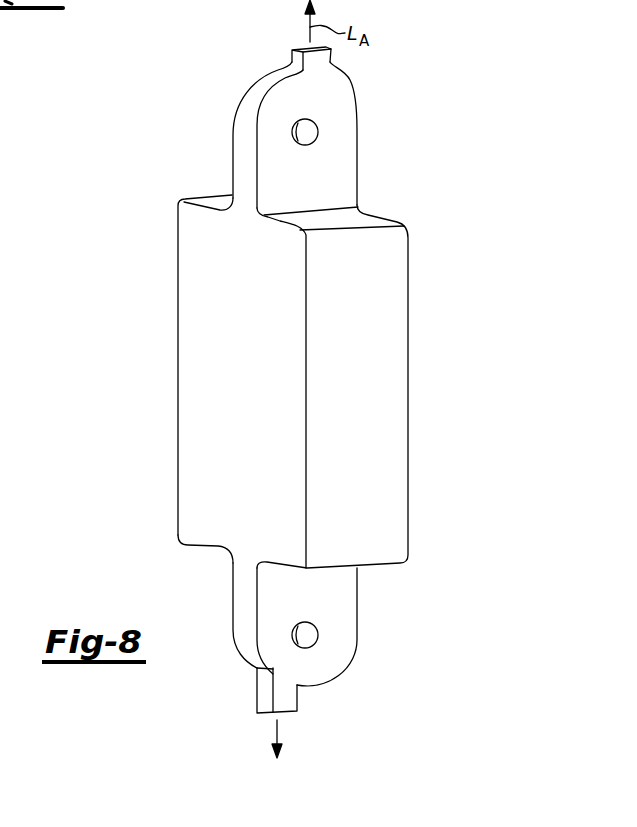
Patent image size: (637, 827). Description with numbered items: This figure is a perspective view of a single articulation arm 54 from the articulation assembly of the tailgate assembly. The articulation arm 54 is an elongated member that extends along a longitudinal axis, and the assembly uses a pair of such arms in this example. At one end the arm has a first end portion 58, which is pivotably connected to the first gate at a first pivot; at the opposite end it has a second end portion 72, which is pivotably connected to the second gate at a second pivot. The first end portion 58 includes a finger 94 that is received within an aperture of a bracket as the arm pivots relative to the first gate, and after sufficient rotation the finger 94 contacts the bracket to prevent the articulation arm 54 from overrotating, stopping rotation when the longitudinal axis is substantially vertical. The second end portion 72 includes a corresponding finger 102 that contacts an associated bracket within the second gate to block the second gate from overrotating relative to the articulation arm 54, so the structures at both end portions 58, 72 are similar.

The articulation arm 54 is at (370, 318).
The first end portion 58 is at (390, 151).
The finger 94 is at (333, 63).
The second end portion 72 is at (385, 625).
The finger 102 is at (283, 698).